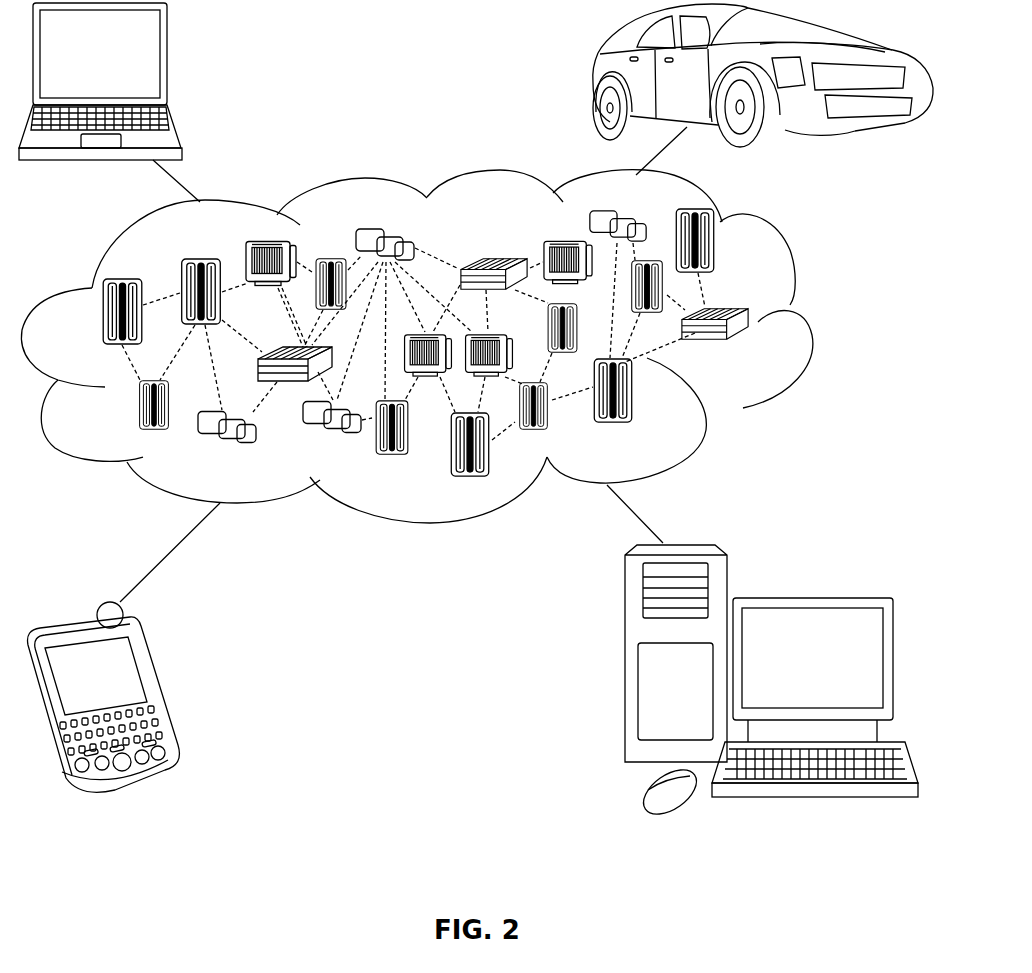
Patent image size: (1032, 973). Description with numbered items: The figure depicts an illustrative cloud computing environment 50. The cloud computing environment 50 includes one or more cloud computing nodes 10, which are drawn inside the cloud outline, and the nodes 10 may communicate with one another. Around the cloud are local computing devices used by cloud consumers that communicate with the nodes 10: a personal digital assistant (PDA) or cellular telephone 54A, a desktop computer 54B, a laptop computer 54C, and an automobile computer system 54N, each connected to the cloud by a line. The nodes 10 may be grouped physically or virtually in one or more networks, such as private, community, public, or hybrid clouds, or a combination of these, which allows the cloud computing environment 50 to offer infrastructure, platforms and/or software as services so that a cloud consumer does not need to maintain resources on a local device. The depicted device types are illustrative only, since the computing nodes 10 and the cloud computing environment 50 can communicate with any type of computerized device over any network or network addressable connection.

The cloud computing nodes 10 is at (755, 350).
The cloud computing environment 50 is at (810, 322).
The personal digital assistant (PDA) or cellular telephone 54A is at (158, 688).
The desktop computer 54B is at (808, 595).
The laptop computer 54C is at (168, 62).
The automobile computer system 54N is at (593, 77).